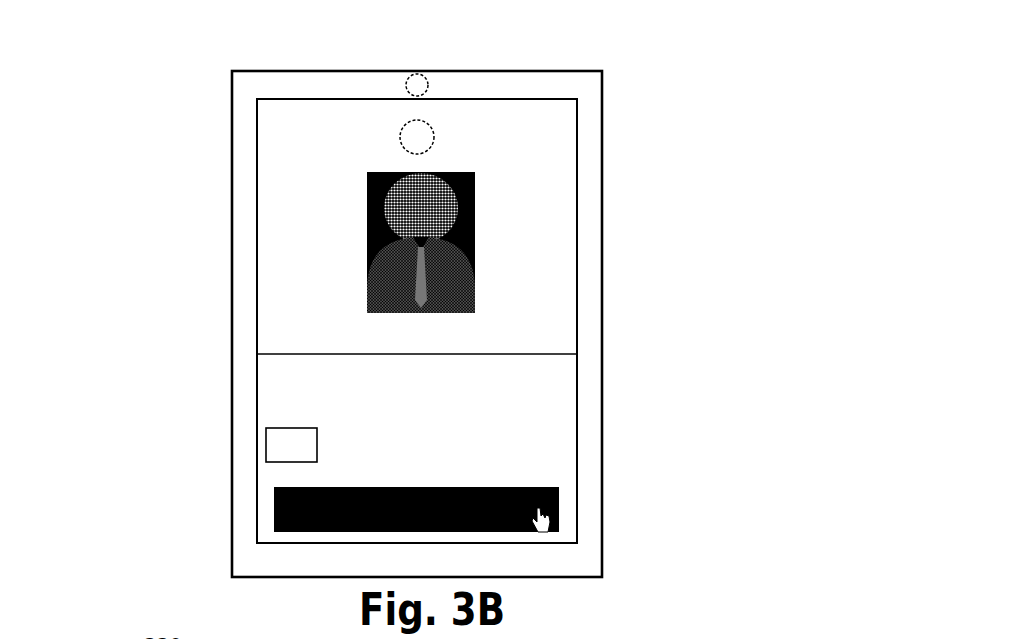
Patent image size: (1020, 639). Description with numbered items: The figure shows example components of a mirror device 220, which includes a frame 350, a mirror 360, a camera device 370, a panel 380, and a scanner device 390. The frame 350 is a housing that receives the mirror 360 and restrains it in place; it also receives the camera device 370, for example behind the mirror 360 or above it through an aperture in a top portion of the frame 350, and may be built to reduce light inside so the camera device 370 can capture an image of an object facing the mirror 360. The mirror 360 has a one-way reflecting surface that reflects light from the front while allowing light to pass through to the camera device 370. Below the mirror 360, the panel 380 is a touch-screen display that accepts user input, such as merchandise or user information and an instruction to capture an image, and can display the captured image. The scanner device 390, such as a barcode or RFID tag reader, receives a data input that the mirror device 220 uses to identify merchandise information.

The mirror device 220 is at (197, 67).
The frame 350 is at (249, 314).
The mirror 360 is at (542, 225).
The camera device 370 is at (407, 88).
The panel 380 is at (533, 418).
The scanner device 390 is at (275, 446).